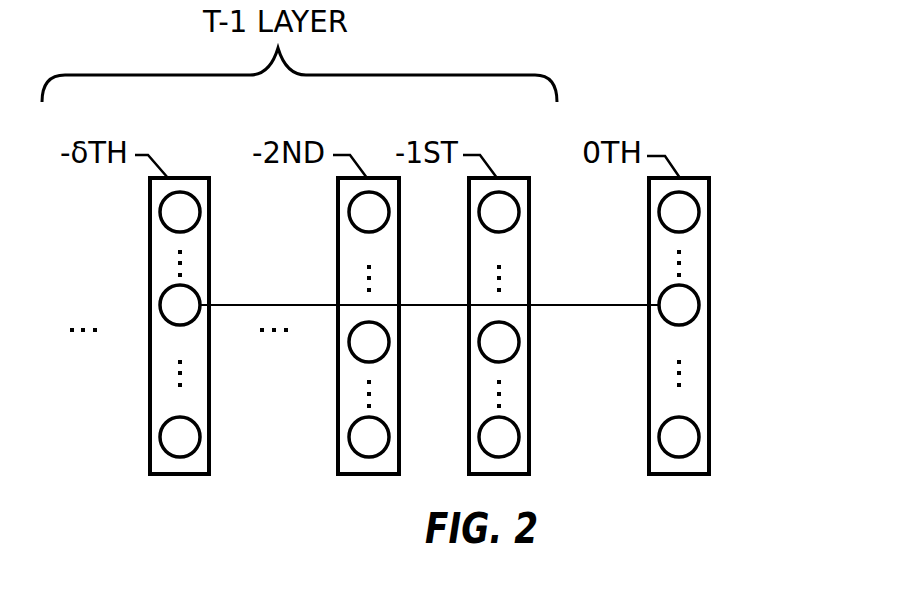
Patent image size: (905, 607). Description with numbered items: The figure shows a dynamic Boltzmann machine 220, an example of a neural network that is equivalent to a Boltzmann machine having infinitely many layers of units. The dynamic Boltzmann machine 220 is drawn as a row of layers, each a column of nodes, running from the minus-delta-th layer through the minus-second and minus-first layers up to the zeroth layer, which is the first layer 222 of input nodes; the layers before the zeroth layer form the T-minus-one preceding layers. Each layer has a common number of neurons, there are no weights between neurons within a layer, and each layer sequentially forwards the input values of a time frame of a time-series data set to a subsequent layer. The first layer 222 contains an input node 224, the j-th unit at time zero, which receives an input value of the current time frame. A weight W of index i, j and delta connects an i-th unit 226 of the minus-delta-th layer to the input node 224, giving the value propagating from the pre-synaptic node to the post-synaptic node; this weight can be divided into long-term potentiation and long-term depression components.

The dynamic Boltzmann machine 220 is at (800, 122).
The first layer 222 is at (710, 264).
The input node 224 is at (696, 320).
The neuron i of the -δth layer 226 is at (163, 323).